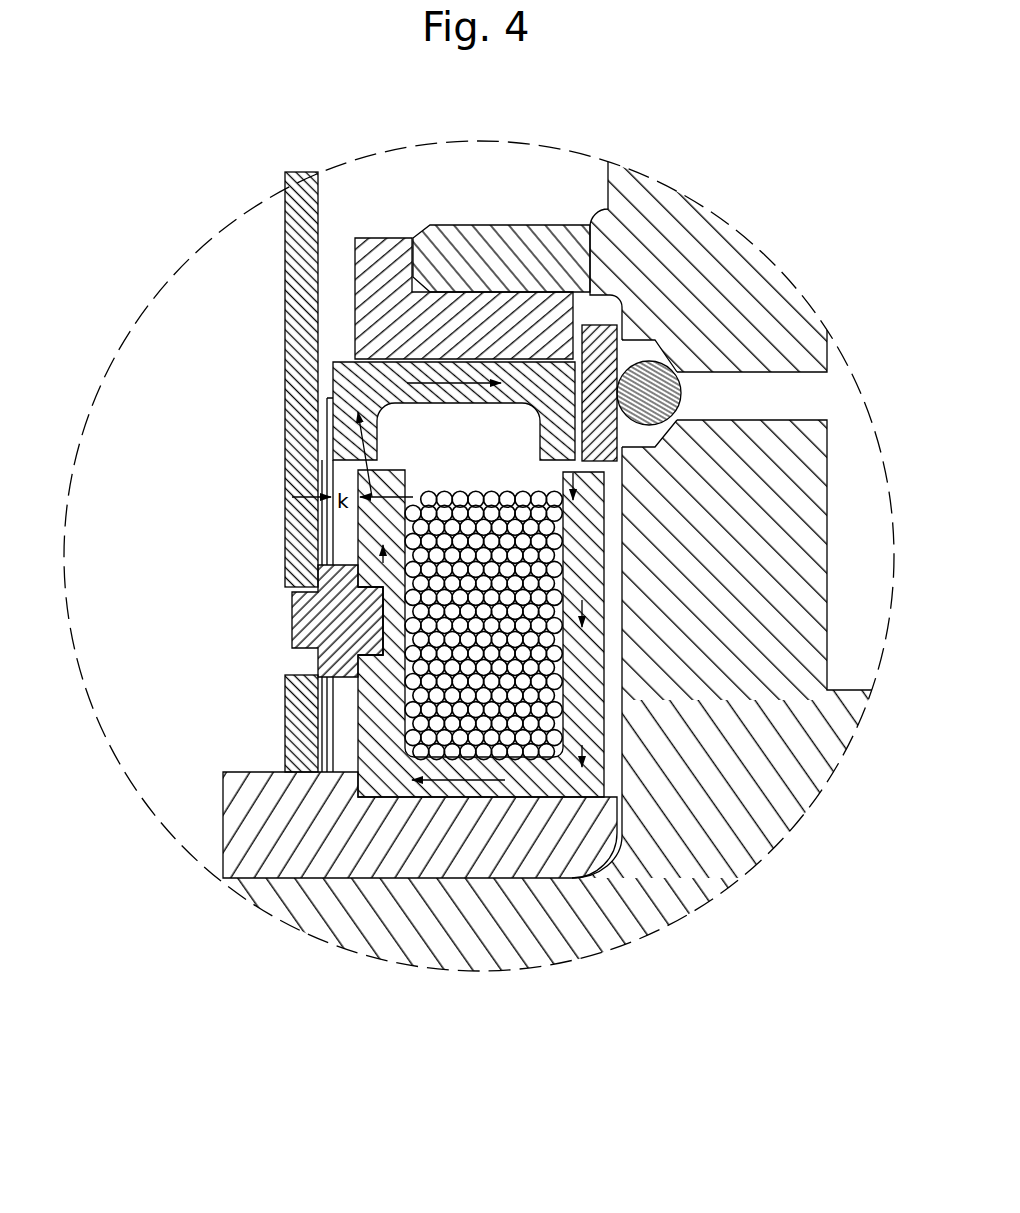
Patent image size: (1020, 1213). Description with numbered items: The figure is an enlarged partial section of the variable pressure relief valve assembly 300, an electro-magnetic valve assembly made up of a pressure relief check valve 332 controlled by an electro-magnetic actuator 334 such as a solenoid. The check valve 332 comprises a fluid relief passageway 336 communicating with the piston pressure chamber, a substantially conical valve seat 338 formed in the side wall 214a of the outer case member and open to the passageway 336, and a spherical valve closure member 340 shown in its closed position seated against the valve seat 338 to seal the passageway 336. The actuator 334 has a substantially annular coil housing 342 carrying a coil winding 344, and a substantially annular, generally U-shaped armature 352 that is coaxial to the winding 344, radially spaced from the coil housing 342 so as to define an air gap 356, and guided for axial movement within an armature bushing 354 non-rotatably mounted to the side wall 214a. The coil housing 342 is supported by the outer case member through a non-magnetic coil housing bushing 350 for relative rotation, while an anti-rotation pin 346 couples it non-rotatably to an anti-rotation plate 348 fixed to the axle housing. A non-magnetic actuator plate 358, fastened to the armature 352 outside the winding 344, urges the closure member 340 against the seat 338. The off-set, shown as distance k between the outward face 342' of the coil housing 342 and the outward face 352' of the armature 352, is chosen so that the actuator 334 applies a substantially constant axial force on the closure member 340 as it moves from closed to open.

The variable pressure relief valve assembly 300 is at (92, 713).
The side wall of the outer case member 214a is at (357, 932).
The pressure relief check valve 332 is at (637, 338).
The electro-magnetic actuator 334 is at (610, 762).
The fluid relief passageway 336 is at (806, 398).
The valve seat 338 is at (660, 357).
The valve closure member 340 is at (662, 393).
The coil housing 342 is at (620, 633).
The outward face of the coil housing 342' is at (299, 596).
The coil winding 344 is at (515, 515).
The anti-rotation pin 346 is at (305, 620).
The anti-rotation plate 348 is at (290, 274).
The coil housing bushing 350 is at (242, 839).
The armature 352 is at (400, 567).
The outward face of the armature 352' is at (282, 585).
The armature bushing 354 is at (373, 250).
The air gap 356 is at (322, 468).
The actuator plate 358 is at (600, 327).